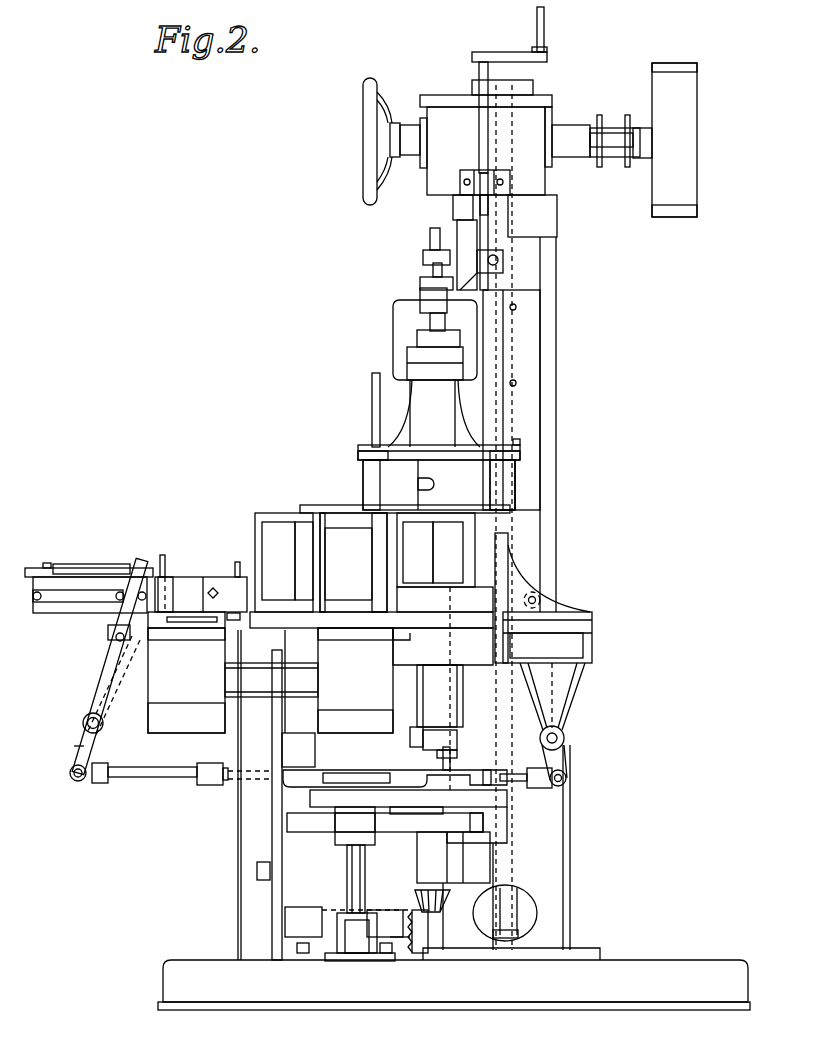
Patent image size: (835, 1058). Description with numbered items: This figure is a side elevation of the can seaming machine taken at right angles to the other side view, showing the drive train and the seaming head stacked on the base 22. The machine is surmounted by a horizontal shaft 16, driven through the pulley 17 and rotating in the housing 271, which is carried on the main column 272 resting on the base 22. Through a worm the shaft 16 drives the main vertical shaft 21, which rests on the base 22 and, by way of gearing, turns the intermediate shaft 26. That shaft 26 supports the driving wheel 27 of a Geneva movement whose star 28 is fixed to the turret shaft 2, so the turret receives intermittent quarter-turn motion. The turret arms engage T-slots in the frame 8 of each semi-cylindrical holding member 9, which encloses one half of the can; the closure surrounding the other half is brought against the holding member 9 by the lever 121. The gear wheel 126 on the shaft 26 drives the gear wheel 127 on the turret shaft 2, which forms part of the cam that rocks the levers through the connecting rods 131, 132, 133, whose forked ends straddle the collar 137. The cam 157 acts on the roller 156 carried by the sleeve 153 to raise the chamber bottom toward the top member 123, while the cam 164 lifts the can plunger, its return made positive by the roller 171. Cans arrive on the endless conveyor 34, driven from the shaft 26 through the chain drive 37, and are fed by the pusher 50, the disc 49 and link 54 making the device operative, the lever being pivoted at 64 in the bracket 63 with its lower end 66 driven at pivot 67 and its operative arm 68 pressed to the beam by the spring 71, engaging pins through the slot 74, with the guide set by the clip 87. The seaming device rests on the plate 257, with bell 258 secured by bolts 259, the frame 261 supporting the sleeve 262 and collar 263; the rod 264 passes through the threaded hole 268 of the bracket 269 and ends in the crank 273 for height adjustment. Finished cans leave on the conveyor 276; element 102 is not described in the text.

The turret shaft 2 is at (347, 870).
The frame 8 is at (413, 557).
The holding member 9 is at (273, 542).
The horizontal shaft 16 is at (612, 132).
The pulley 17 is at (683, 120).
The main vertical shaft 21 is at (508, 906).
The base 22 is at (507, 997).
The intermediate shaft 26 is at (437, 867).
The driving wheel 27 is at (488, 822).
The star 28 is at (296, 822).
The endless conveyor 34 is at (172, 688).
The chain drive 37 is at (272, 738).
The disc 49 is at (58, 572).
The angular pusher 50 is at (236, 570).
The link 54 is at (93, 570).
The bracket 63 is at (105, 684).
The pivot 64 is at (83, 724).
The lower end of lever 66 is at (78, 745).
The pivot 67 is at (78, 781).
The operative arm 68 is at (150, 555).
The spring 71 is at (116, 637).
The slot 74 is at (82, 597).
The clip 87 is at (210, 578).
The rod 102 is at (372, 392).
The lever 121 is at (542, 603).
The top member 123 is at (407, 486).
The gear wheel 126 is at (507, 806).
The gear wheel 127 is at (312, 804).
The connecting rod 131 is at (147, 777).
The connecting rod 132 is at (377, 780).
The connecting rod 133 is at (503, 773).
The collar 137 is at (353, 778).
The sleeve 153 is at (452, 700).
The roller 156 is at (415, 728).
The cam 157 is at (322, 750).
The cam 164 is at (455, 752).
The roller 171 is at (451, 760).
The plate 257 is at (521, 448).
The bell 258 is at (497, 489).
The bolts 259 is at (519, 440).
The frame 261 is at (402, 408).
The sleeve 262 is at (417, 298).
The collar 263 is at (425, 283).
The rod 264 is at (480, 126).
The threaded hole 268 is at (488, 181).
The bracket 269 is at (466, 178).
The housing 271 is at (435, 112).
The main column 272 is at (556, 367).
The crank 273 is at (539, 50).
The conveyor 276 is at (405, 680).